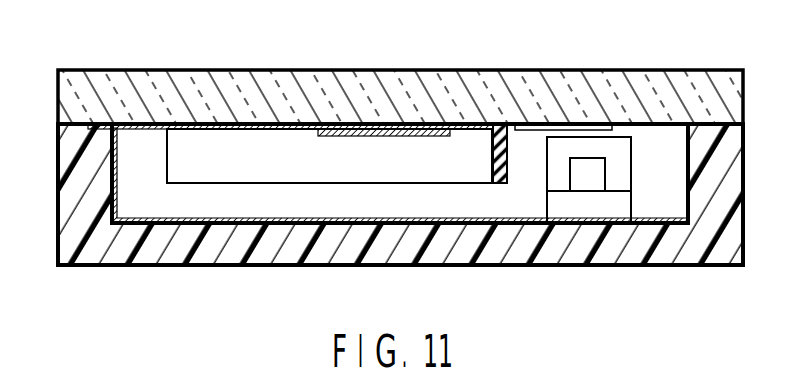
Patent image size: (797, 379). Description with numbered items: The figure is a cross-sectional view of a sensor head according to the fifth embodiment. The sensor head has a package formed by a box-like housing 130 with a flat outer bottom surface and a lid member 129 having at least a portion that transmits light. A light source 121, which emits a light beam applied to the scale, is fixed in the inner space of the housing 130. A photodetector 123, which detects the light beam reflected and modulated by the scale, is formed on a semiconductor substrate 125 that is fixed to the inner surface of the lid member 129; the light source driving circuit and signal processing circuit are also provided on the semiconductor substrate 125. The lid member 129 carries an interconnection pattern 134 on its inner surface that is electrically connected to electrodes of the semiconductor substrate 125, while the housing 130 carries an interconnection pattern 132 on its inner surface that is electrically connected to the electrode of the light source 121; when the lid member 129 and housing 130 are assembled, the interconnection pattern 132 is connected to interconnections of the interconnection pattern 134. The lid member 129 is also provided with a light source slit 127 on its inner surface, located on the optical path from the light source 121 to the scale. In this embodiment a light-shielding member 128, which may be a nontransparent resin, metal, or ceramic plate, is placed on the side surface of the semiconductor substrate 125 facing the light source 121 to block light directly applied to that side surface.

The light source 121 is at (620, 204).
The photodetector 123 is at (415, 130).
The semiconductor substrate 125 is at (281, 153).
The light source slit 127 is at (550, 126).
The light-shielding member 128 is at (495, 187).
The lid member 129 is at (678, 108).
The housing 130 is at (85, 242).
The interconnection pattern 132 is at (145, 221).
The interconnection pattern 134 is at (108, 124).